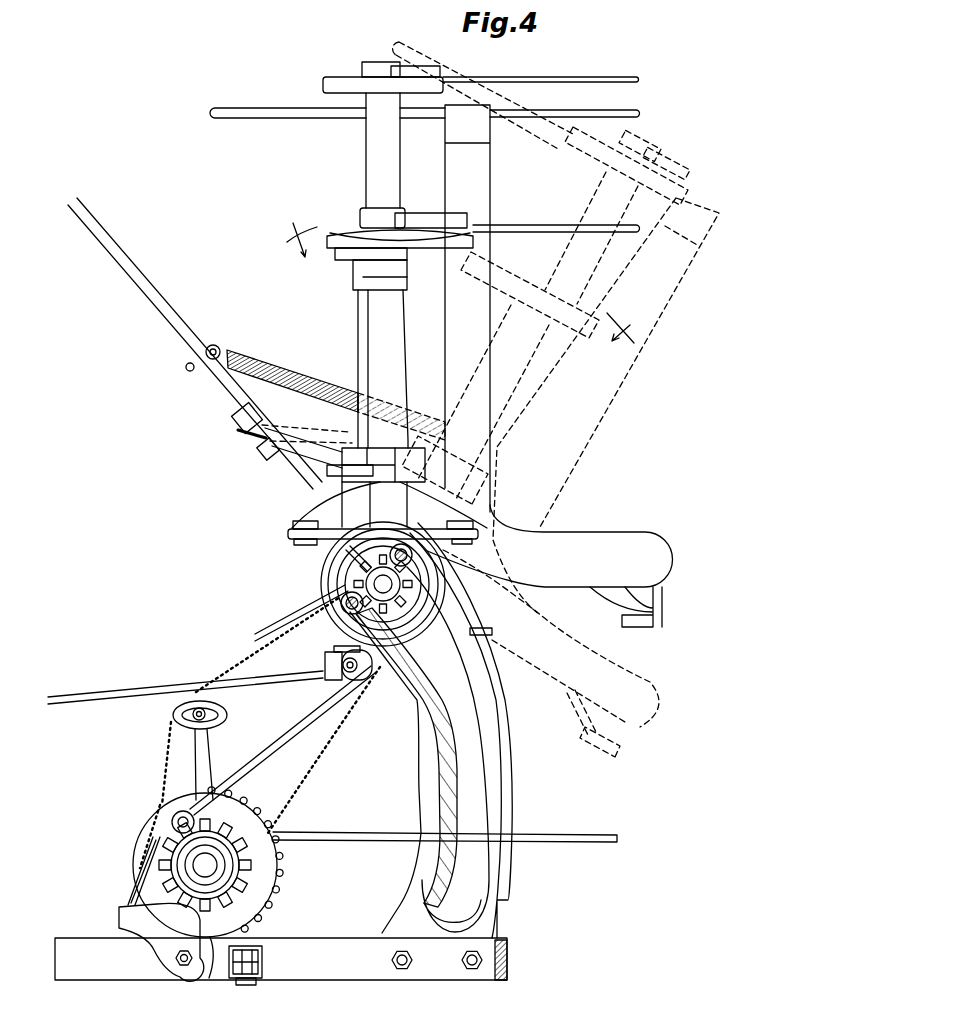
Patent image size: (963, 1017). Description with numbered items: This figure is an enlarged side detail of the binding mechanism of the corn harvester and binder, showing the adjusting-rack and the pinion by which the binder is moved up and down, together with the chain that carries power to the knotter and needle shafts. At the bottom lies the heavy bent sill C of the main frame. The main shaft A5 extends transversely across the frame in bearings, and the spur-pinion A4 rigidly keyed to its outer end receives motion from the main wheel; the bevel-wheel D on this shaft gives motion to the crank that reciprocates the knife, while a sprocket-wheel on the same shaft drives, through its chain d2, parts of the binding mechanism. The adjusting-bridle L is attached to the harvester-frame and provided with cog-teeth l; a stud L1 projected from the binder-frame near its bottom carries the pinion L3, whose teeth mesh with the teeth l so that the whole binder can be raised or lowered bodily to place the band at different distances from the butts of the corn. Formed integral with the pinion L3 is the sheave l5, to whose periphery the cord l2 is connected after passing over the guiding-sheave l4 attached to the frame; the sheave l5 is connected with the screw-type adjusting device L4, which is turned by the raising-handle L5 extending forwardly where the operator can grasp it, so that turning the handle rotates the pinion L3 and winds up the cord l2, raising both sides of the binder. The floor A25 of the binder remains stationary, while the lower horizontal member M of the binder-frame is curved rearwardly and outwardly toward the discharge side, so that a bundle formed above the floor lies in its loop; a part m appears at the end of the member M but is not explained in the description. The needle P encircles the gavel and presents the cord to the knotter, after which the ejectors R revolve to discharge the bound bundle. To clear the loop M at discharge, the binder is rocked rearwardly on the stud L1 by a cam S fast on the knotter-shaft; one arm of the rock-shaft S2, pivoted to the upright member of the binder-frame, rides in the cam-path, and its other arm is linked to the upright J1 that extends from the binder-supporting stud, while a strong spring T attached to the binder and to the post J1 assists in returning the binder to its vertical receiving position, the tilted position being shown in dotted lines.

The needle P is at (272, 113).
The ejectors R is at (606, 80).
The cam S is at (356, 232).
The rock-shaft S2 is at (361, 350).
The upright J1 is at (155, 303).
The spring T is at (307, 373).
The lower horizontal member of the binder-frame M is at (639, 547).
The bracket foot m is at (655, 611).
The adjusting-bridle L is at (497, 753).
The stud L1 is at (421, 620).
The cog-teeth l is at (436, 693).
The pinion L3 is at (355, 614).
The sheave l5 is at (330, 566).
The cord l2 is at (302, 605).
The chain d2 is at (241, 658).
The raising-handle L5 is at (111, 693).
The adjusting device L4 is at (362, 684).
The bevel-wheel D is at (248, 811).
The spur-pinion A4 is at (234, 887).
The main shaft A5 is at (214, 866).
The guiding-sheave l4 is at (140, 871).
The floor A25 is at (601, 836).
The sill C is at (315, 971).